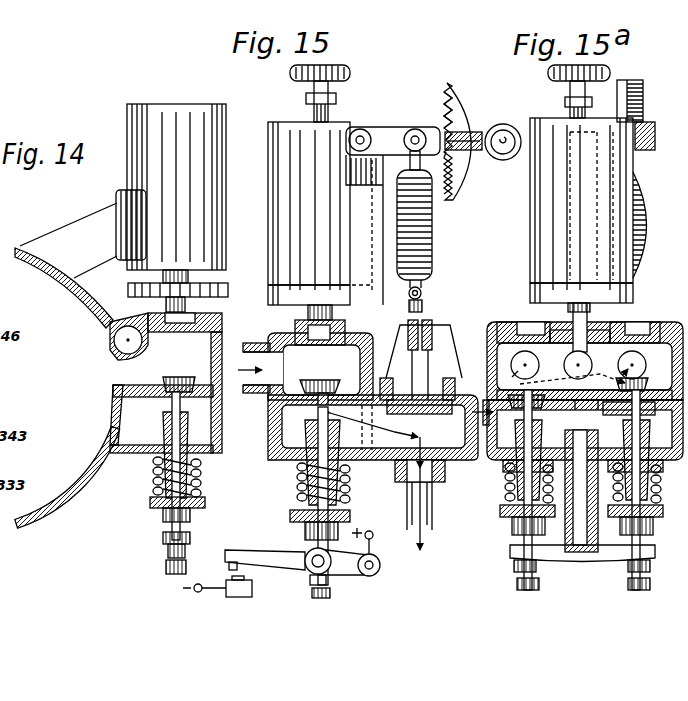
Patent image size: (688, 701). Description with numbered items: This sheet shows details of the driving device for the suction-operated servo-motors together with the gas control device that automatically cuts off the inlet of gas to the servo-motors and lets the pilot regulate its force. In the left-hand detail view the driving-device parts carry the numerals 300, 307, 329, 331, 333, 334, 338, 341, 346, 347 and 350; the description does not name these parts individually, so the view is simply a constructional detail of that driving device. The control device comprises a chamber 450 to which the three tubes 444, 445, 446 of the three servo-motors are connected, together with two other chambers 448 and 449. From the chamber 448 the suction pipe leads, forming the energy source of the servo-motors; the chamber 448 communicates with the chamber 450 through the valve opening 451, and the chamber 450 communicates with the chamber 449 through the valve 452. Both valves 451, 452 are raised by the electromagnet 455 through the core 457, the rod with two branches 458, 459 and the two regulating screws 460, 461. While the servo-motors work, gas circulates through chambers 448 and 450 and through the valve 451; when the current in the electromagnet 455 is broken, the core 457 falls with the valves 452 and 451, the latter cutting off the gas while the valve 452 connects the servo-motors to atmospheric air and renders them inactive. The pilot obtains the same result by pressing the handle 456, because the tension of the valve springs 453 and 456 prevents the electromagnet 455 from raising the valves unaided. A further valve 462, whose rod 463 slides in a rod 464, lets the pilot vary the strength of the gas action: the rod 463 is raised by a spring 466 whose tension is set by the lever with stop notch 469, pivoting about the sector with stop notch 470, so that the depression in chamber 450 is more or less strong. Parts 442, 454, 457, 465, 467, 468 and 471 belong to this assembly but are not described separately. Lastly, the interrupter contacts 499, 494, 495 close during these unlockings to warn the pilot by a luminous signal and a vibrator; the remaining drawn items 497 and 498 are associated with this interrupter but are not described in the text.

In FIG. 14, the lever arm 300 is at (25, 256).
In FIG. 14, the cylinder 307 is at (177, 118).
In FIG. 14, the adjusting collar 329 is at (165, 540).
In FIG. 14, the valve chamber 331 is at (162, 395).
In FIG. 14, the valve spring 333 is at (187, 478).
In FIG. 14, the lock nut 334 is at (167, 568).
In FIG. 14, the valve housing frame 338 is at (208, 338).
In FIG. 14, the chamber wall 341 is at (133, 435).
In FIG. 14, the pivot bracket 346 is at (127, 367).
In FIG. 14, the pivot pin 347 is at (113, 340).
In FIG. 14, the link bracket 350 is at (88, 222).
In FIG. 15, the outlet pipe 442 is at (432, 510).
In FIG. 15, the tube of servo-motor 444 is at (305, 360).
In FIG. 15A, the tube of servo-motor 444 is at (500, 333).
In FIG. 15, the tube of servo-motor 445 is at (306, 381).
In FIG. 15A, the tube of servo-motor 445 is at (573, 330).
In FIG. 15, the tube of servo-motor 446 is at (312, 380).
In FIG. 15, the chamber 448 is at (452, 462).
In FIG. 15A, the chamber 448 is at (672, 456).
In FIG. 15A, the chamber 449 is at (558, 447).
In FIG. 15, the chamber 450 is at (337, 312).
In FIG. 15A, the chamber 450 is at (658, 336).
In FIG. 15, the valve opening 451 is at (289, 397).
In FIG. 15A, the valve opening 451 is at (641, 372).
In FIG. 15A, the valve 452 is at (495, 498).
In FIG. 15A, the valve spring 453 is at (503, 500).
In FIG. 15, the valve spring 454 is at (302, 470).
In FIG. 15A, the valve spring 454 is at (646, 510).
In FIG. 15, the electromagnet 455 is at (285, 155).
In FIG. 15A, the electromagnet 455 is at (552, 183).
In FIG. 15, the handle 456 is at (312, 110).
In FIG. 15A, the handle 456 is at (609, 72).
In FIG. 15, the core 457 is at (278, 297).
In FIG. 15A, the core 457 is at (540, 297).
In FIG. 15A, the branch of rod 458 is at (606, 447).
In FIG. 15A, the branch of rod 459 is at (612, 556).
In FIG. 15A, the regulating screw 460 is at (516, 590).
In FIG. 15A, the regulating screw 461 is at (633, 590).
In FIG. 15, the valve 462 is at (454, 395).
In FIG. 15A, the valve 462 is at (603, 408).
In FIG. 15, the rod 463 is at (427, 316).
In FIG. 15, the rod 464 is at (436, 348).
In FIG. 15, the piston rod 465 is at (362, 303).
In FIG. 15, the spring 466 is at (434, 214).
In FIG. 15A, the spring 466 is at (649, 183).
In FIG. 15, the pivot pin 467 is at (417, 128).
In FIG. 15, the arm 468 is at (363, 125).
In FIG. 15, the lever with stop notch 469 is at (450, 127).
In FIG. 15, the sector with stop notch 470 is at (462, 172).
In FIG. 15A, the sector with stop notch 470 is at (643, 88).
In FIG. 15, the pinion 471 is at (503, 126).
In FIG. 15, the interrupter contact 494 is at (276, 556).
In FIG. 15, the interrupter contact 495 is at (378, 552).
In FIG. 15, the pin 497 is at (234, 550).
In FIG. 15, the weight 498 is at (252, 590).
In FIG. 15, the interrupter contact 499 is at (198, 592).